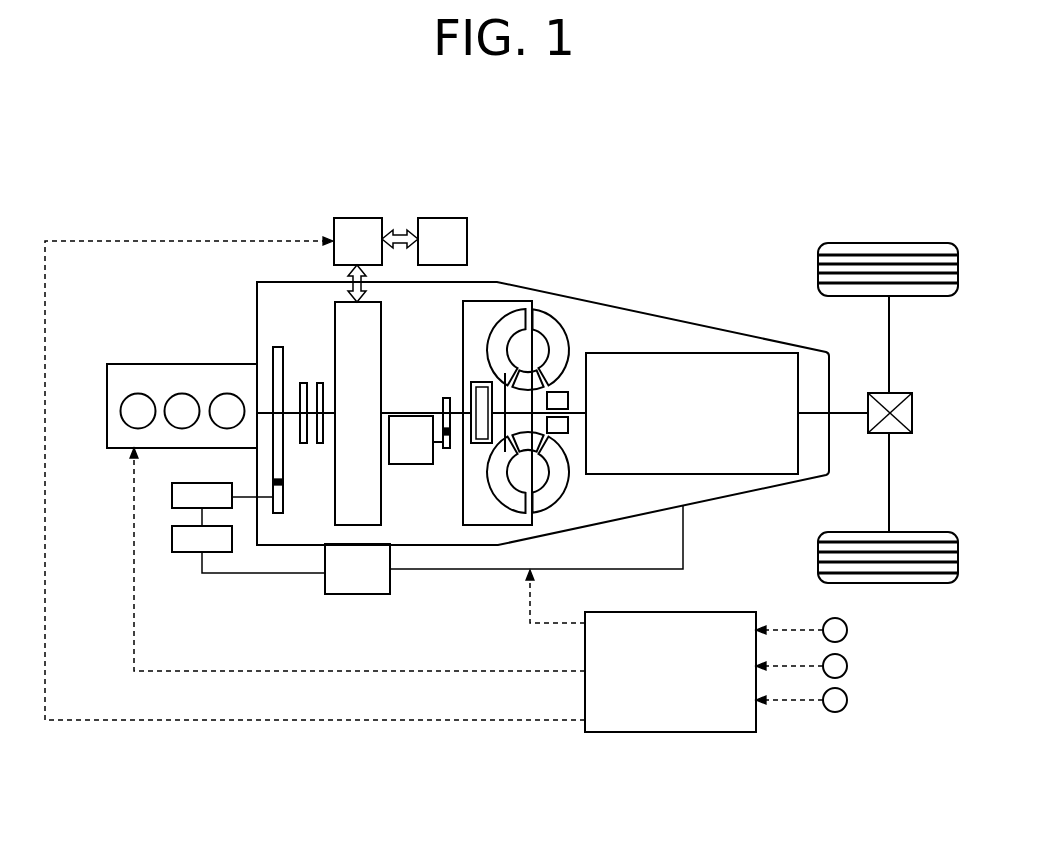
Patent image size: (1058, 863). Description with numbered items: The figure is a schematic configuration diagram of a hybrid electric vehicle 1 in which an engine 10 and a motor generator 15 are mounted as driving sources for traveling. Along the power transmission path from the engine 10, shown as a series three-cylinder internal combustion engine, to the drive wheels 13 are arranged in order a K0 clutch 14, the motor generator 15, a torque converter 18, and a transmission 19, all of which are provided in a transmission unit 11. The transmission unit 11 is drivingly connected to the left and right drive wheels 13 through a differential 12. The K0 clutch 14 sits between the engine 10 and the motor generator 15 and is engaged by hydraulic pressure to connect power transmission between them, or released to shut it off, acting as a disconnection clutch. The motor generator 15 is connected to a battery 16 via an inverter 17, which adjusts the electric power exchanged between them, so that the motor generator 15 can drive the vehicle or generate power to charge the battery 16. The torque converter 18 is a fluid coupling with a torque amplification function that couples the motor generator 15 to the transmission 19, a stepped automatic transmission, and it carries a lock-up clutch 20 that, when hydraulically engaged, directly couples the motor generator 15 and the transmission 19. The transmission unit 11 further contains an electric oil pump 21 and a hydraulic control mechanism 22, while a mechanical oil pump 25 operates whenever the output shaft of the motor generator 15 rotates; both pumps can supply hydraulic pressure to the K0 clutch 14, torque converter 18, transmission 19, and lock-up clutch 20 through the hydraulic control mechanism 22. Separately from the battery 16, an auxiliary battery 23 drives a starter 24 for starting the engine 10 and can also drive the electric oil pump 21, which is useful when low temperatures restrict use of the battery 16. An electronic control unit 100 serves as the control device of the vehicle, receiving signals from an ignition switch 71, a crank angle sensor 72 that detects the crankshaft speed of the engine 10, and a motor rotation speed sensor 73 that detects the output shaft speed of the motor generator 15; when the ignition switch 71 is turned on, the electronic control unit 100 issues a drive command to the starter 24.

The hybrid electric vehicle 1 is at (618, 260).
The engine 10 is at (107, 448).
The transmission unit 11 is at (758, 490).
The differential 12 is at (898, 393).
The drive wheels 13 is at (940, 296).
The K0 clutch 14 is at (319, 383).
The motor generator 15 is at (335, 316).
The battery 16 is at (467, 240).
The inverter 17 is at (333, 251).
The torque converter 18 is at (562, 328).
The transmission 19 is at (618, 475).
The lock-up clutch 20 is at (475, 382).
The electric oil pump 21 is at (347, 594).
The hydraulic control mechanism 22 is at (452, 569).
The auxiliary battery 23 is at (179, 552).
The starter 24 is at (192, 483).
The mechanical oil pump 25 is at (420, 464).
The ignition switch 71 is at (847, 630).
The crank angle sensor 72 is at (847, 666).
The motor rotation speed sensor 73 is at (847, 700).
The electronic control unit (ECU) 100 is at (700, 612).